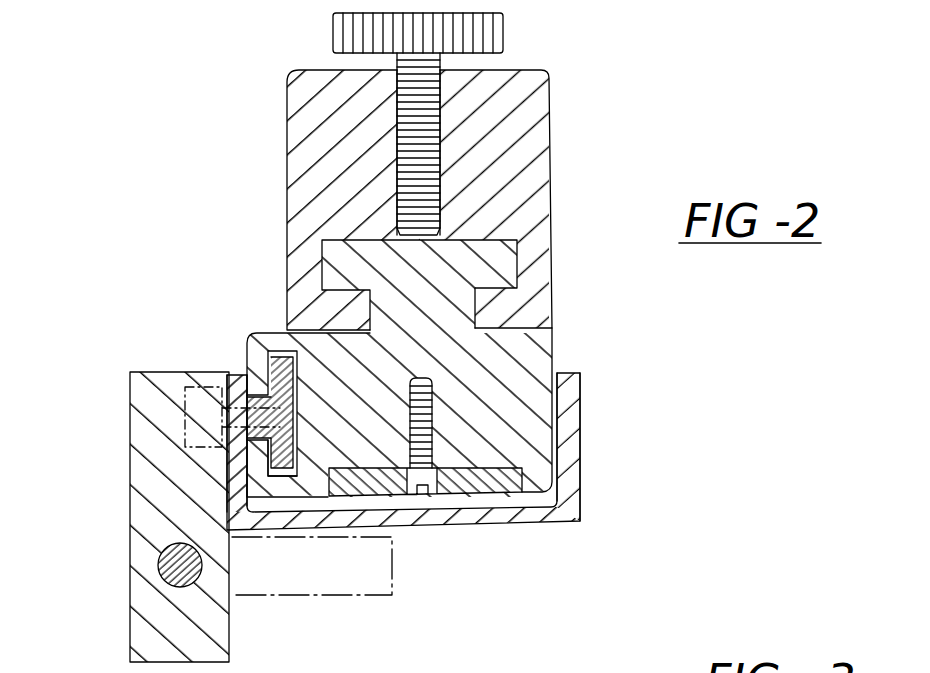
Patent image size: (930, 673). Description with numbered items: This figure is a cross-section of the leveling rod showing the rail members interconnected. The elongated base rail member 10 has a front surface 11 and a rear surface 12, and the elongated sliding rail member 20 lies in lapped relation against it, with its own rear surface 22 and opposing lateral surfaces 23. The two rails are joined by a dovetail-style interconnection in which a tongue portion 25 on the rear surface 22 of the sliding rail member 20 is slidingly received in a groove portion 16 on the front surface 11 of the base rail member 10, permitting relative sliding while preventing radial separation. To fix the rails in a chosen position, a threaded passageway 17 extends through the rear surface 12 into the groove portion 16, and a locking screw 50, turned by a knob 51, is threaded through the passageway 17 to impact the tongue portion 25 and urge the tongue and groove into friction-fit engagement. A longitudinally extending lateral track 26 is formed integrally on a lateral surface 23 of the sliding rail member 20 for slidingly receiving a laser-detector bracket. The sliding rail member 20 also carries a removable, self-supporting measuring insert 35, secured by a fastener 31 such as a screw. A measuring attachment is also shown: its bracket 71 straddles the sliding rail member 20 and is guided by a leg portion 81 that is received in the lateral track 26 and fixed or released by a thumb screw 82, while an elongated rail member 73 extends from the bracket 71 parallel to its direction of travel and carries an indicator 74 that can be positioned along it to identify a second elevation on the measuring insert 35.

The base rail member 10 is at (429, 252).
The front surface 11 is at (552, 327).
The rear surface 12 is at (538, 70).
The groove portion 16 is at (505, 232).
The threaded passageway 17 is at (390, 180).
The sliding rail member 20 is at (378, 425).
The rear surface 22 is at (268, 351).
The lateral surfaces 23 is at (250, 495).
The tongue portion 25 is at (490, 270).
The lateral track 26 is at (273, 356).
The fastener 31 is at (437, 492).
The measuring insert 35 is at (490, 487).
The locking screw 50 is at (412, 140).
The knob 51 is at (333, 42).
The bracket 71 is at (588, 523).
The rail member 73 is at (188, 562).
The indicator 74 is at (268, 580).
The leg portion 81 is at (280, 455).
The thumb screw 82 is at (197, 408).